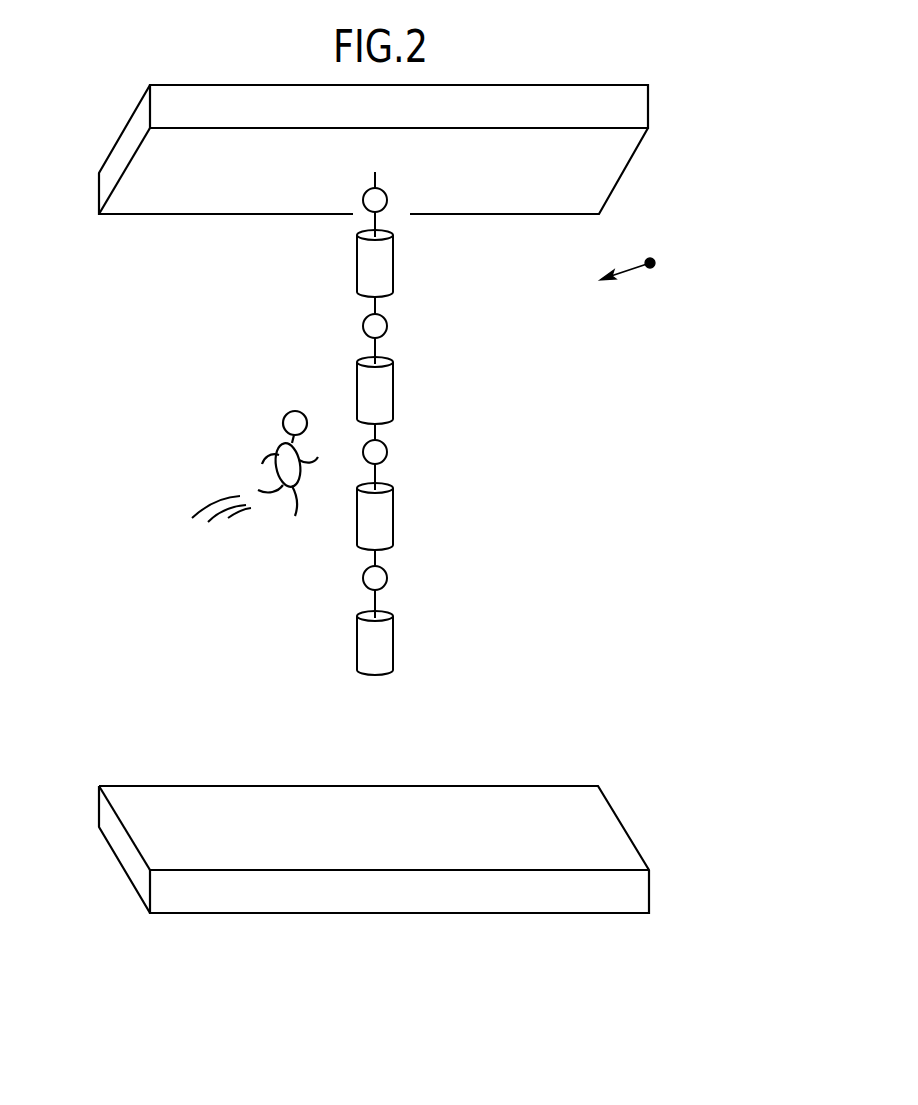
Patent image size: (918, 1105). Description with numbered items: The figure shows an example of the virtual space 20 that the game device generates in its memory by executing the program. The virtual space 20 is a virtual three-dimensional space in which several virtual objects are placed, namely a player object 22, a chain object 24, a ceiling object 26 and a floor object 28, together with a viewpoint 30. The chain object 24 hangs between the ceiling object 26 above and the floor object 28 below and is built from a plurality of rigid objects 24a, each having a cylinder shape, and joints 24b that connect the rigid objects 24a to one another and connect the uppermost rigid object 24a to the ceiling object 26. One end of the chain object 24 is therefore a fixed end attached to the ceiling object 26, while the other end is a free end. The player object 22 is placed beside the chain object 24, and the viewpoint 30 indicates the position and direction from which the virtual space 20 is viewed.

The virtual space 20 is at (311, 938).
The player object 22 is at (295, 410).
The chain object 24 is at (434, 423).
The rigid object 24a is at (393, 278).
The joint 24b is at (387, 205).
The ceiling object 26 is at (625, 178).
The floor object 28 is at (630, 830).
The viewpoint 30 is at (651, 268).